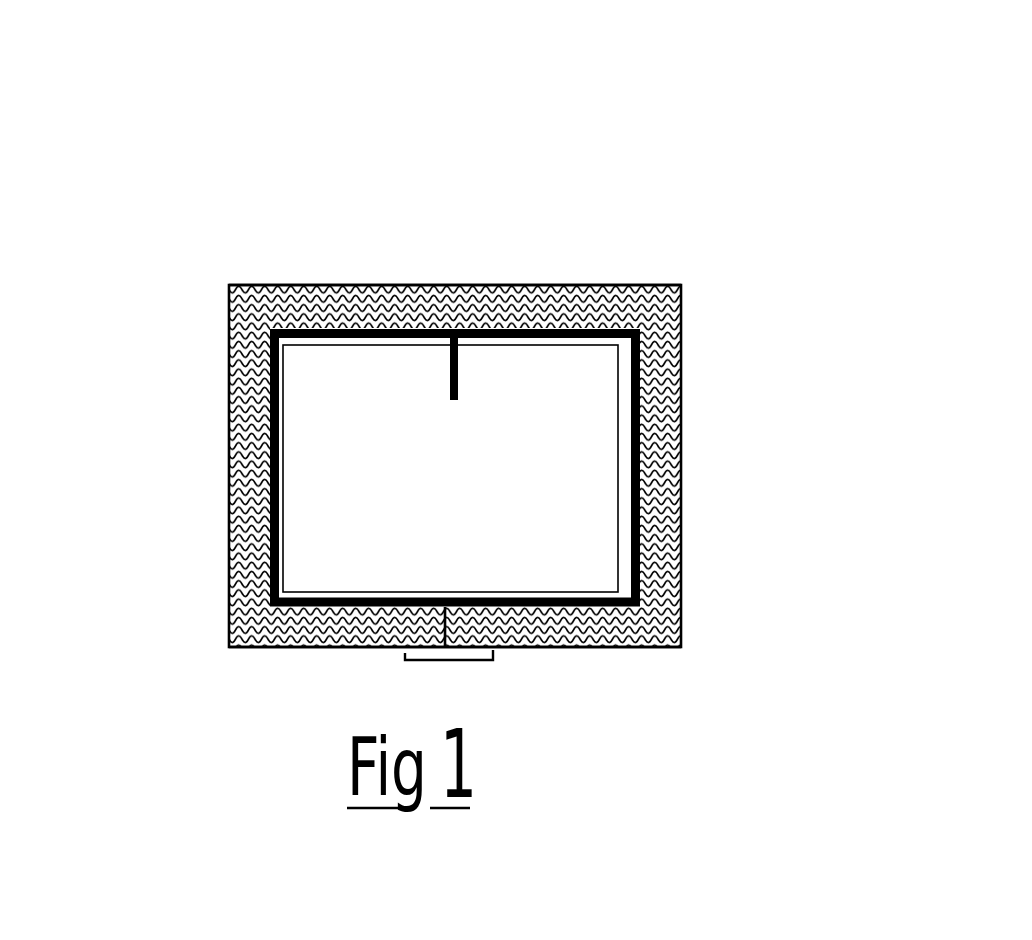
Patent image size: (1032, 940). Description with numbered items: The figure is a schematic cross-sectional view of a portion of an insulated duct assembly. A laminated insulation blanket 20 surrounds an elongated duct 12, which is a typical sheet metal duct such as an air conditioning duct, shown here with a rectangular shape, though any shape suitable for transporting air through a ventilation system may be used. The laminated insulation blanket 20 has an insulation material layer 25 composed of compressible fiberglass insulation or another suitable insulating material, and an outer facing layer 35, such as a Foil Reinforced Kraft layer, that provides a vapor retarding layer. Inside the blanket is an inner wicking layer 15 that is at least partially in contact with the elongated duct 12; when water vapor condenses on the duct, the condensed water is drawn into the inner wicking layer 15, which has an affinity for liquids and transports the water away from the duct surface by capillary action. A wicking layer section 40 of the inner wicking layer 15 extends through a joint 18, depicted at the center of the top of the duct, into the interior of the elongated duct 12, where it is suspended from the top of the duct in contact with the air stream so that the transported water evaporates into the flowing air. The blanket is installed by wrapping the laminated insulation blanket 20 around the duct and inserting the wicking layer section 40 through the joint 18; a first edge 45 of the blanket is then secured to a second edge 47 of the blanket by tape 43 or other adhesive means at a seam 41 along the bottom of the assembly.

The laminated insulation blanket 20 is at (733, 212).
The joint 18 is at (457, 336).
The insulation material layer 25 is at (240, 393).
The outer facing layer 35 is at (680, 378).
The elongated duct 12 is at (618, 438).
The inner wicking layer 15 is at (643, 500).
The wicking layer section 40 is at (455, 340).
The second edge 47 is at (317, 650).
The tape 43 is at (420, 662).
The seam 41 is at (457, 630).
The first edge 45 is at (573, 657).